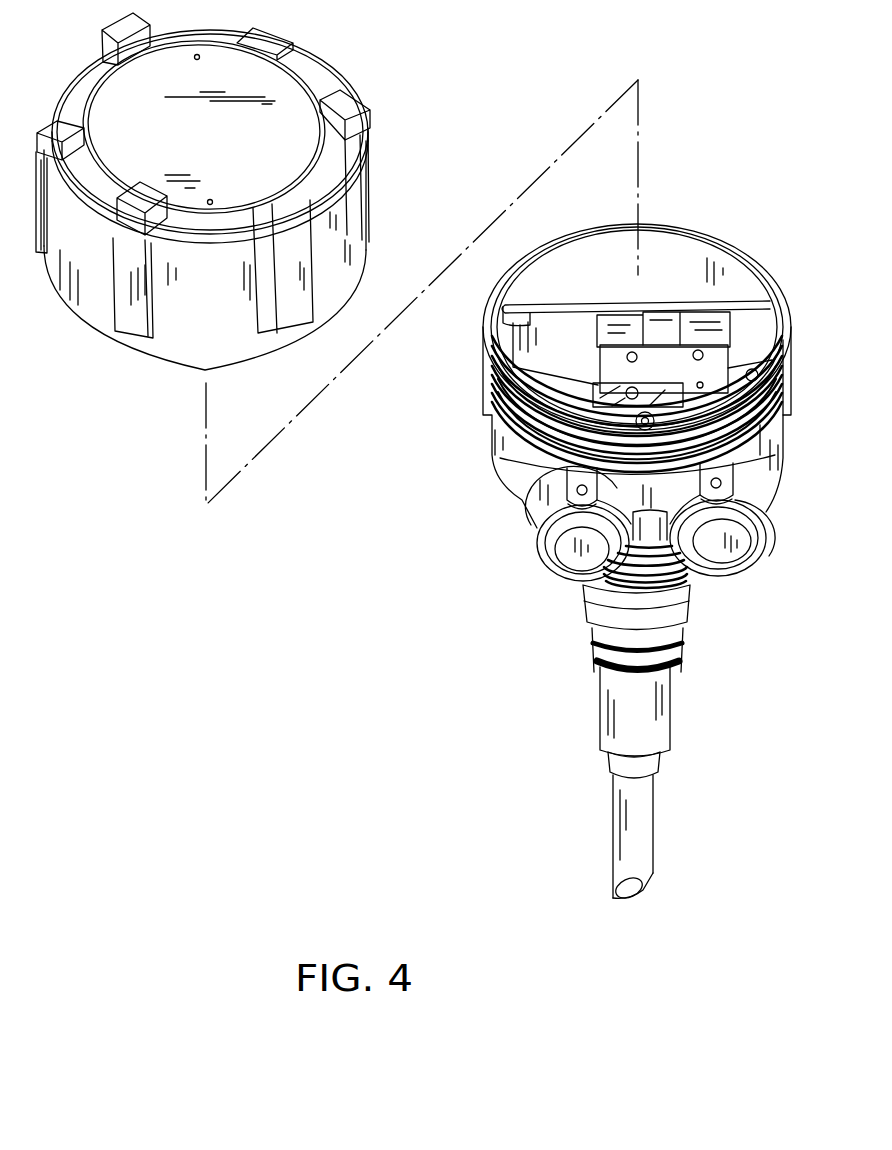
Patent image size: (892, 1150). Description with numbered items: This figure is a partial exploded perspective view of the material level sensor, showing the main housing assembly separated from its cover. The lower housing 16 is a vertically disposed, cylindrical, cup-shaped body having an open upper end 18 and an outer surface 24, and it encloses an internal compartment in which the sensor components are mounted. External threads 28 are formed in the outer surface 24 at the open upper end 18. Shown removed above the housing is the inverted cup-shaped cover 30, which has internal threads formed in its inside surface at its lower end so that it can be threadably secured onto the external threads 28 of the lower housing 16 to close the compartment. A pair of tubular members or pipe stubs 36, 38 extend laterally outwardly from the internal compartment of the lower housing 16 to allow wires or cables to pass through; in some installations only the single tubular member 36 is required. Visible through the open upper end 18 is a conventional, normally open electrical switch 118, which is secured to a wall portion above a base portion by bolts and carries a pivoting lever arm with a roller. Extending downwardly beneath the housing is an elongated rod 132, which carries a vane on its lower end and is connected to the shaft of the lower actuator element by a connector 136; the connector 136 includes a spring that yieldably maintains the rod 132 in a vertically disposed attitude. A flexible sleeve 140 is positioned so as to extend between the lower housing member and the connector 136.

The lower housing 16 is at (502, 475).
The open upper end 18 is at (718, 265).
The outer surface 24 is at (495, 432).
The external threads 28 is at (788, 383).
The cover 30 is at (368, 184).
The tubular member 36 is at (586, 557).
The tubular member 38 is at (721, 556).
The electrical switch 118 is at (669, 348).
The rod 132 is at (643, 847).
The connector 136 is at (617, 695).
The flexible sleeve 140 is at (683, 617).